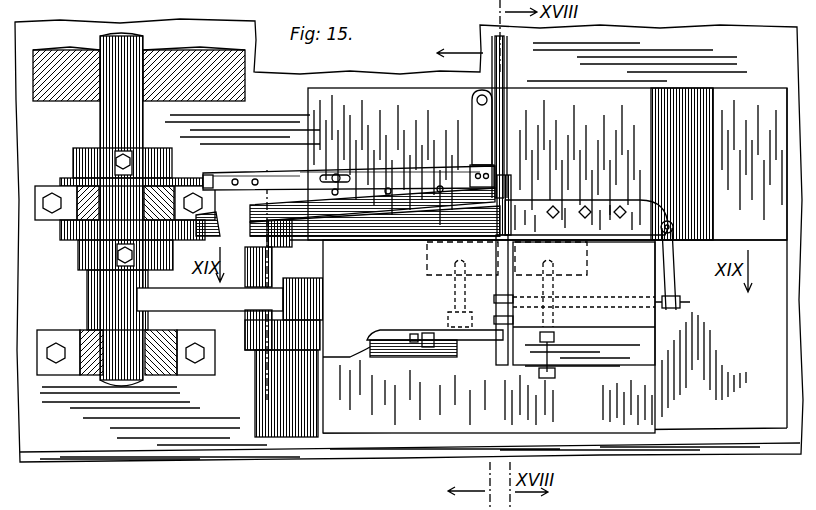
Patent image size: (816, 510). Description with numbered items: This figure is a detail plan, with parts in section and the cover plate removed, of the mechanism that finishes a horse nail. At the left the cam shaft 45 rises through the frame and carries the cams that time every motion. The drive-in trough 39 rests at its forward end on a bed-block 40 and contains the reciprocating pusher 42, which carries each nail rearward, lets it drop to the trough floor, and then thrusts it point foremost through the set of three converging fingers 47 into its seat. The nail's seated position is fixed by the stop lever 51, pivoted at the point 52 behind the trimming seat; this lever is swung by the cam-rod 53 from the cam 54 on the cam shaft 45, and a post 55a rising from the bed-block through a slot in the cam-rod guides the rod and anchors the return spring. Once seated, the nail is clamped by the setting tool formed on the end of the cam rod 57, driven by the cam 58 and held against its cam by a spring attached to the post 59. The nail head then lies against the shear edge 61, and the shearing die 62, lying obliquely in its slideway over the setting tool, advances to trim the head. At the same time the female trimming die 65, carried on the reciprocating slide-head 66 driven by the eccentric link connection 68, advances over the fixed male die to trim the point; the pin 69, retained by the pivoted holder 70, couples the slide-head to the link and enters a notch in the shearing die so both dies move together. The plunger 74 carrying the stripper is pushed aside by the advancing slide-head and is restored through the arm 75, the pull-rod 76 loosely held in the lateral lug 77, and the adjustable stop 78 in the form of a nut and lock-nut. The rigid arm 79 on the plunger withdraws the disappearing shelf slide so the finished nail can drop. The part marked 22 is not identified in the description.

The guide bar 22 is at (270, 215).
The drive-in trough 39 is at (508, 78).
The bed-block 40 is at (547, 256).
The pusher 42 is at (505, 44).
The cam shaft 45 is at (125, 386).
The converging fingers 47 is at (510, 176).
The stop lever 51 is at (470, 122).
The pivot point 52 is at (494, 97).
The cam-rod 53 is at (390, 170).
The cam 54 is at (181, 150).
The post 55a is at (345, 176).
The cam rod of setting tool 57 is at (455, 228).
The cam 58 is at (58, 240).
The post 59 is at (470, 237).
The shear edge 61 is at (522, 198).
The shearing die 62 is at (300, 205).
The female trimming die 65 is at (516, 262).
The slide-head 66 is at (538, 336).
The eccentric link connection 68 is at (210, 299).
The pin 69 is at (294, 240).
The pivoted button or holder 70 is at (322, 380).
The plunger 74 is at (612, 296).
The arm 75 is at (522, 322).
The pull-rod 76 is at (480, 342).
The lateral lug 77 is at (425, 358).
The adjustable stop 78 is at (412, 343).
The laterally extending arm 79 is at (674, 280).